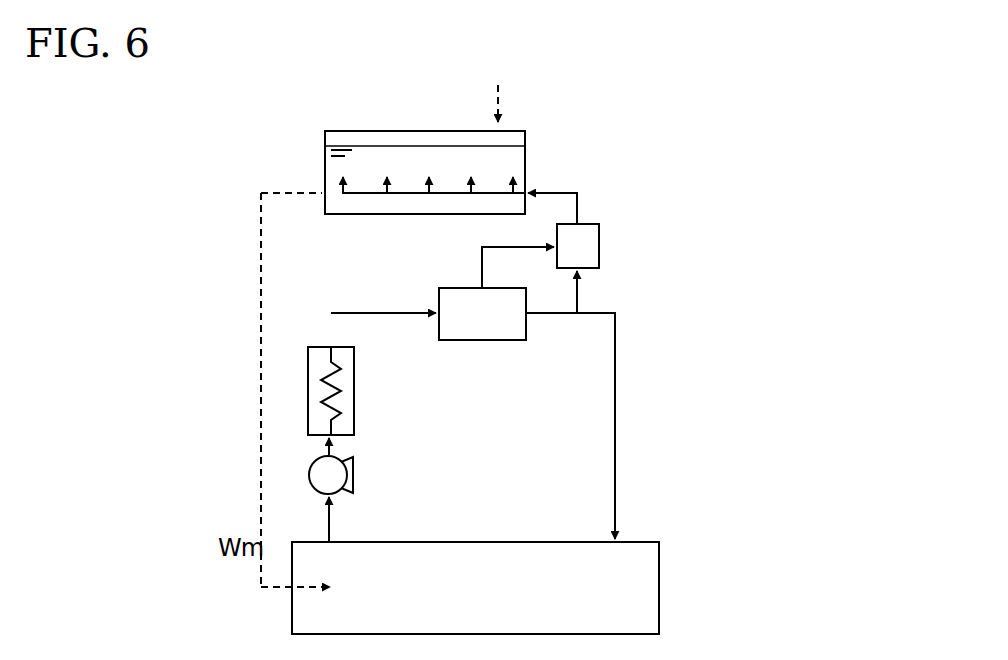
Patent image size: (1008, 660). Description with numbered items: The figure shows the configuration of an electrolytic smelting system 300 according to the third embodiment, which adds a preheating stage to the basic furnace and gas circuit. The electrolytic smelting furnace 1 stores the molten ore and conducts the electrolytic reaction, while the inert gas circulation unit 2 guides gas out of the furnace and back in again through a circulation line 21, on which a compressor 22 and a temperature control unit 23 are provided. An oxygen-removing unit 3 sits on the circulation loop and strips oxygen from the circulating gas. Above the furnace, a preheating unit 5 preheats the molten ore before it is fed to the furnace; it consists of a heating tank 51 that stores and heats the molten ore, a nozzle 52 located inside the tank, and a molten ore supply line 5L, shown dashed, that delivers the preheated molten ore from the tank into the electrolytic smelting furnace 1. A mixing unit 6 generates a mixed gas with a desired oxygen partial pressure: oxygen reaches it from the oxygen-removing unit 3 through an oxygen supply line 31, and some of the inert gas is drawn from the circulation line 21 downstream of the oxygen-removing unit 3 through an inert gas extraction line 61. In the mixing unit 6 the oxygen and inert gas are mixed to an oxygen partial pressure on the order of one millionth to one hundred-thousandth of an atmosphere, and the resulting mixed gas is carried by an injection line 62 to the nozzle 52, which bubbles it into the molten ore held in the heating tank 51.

The electrolytic smelting system 300 is at (158, 142).
The electrolytic smelting furnace 1 is at (662, 586).
The inert gas circulation unit 2 is at (619, 374).
The circulation line 21 is at (617, 443).
The compressor 22 is at (309, 476).
The temperature control unit 23 is at (307, 390).
The oxygen-removing unit 3 is at (483, 341).
The oxygen supply line 31 is at (503, 246).
The preheating unit 5 is at (528, 152).
The heating tank 51 is at (323, 163).
The nozzle 52 is at (403, 192).
The molten ore supply line 5L is at (260, 296).
The mixing unit 6 is at (600, 255).
The inert gas extraction line 61 is at (579, 298).
The injection line 62 is at (579, 208).